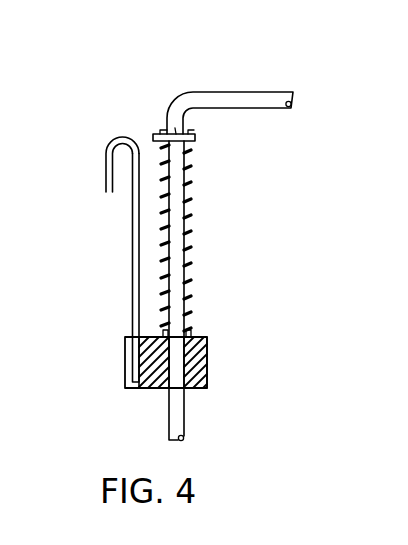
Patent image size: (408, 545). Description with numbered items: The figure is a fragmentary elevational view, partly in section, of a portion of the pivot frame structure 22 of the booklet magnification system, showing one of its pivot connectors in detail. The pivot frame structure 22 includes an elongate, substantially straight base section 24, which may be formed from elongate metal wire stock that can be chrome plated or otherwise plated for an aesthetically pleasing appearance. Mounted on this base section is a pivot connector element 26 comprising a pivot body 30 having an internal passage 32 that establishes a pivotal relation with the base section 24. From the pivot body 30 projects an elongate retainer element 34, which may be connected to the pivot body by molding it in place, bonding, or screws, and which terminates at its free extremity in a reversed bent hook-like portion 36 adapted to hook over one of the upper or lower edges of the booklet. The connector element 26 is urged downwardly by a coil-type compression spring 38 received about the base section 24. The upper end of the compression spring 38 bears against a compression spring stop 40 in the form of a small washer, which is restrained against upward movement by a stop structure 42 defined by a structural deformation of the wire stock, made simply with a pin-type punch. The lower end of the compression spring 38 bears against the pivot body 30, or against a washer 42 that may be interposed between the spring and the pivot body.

The pivot frame structure 22 is at (196, 66).
The base section 24 is at (173, 405).
The pivot connector element 26 is at (98, 128).
The pivot body 30 is at (147, 357).
The internal passage 32 is at (181, 351).
The retainer element 34 is at (130, 260).
The hook-like portion 36 is at (106, 160).
The compression spring 38 is at (190, 208).
The compression spring stop 40 is at (195, 138).
The stop structure 42 is at (163, 133).